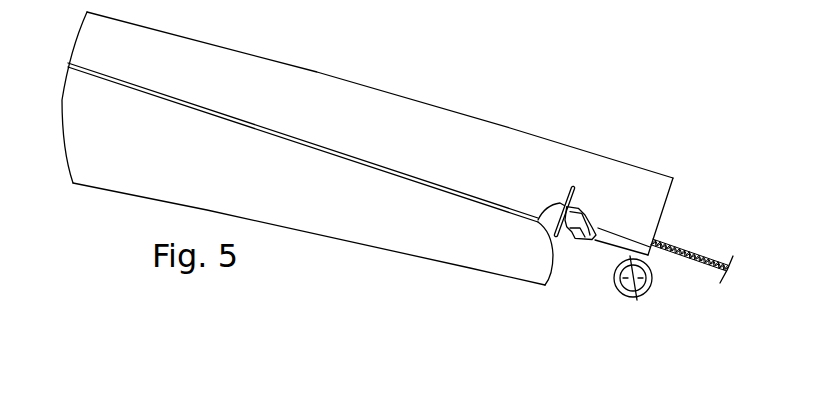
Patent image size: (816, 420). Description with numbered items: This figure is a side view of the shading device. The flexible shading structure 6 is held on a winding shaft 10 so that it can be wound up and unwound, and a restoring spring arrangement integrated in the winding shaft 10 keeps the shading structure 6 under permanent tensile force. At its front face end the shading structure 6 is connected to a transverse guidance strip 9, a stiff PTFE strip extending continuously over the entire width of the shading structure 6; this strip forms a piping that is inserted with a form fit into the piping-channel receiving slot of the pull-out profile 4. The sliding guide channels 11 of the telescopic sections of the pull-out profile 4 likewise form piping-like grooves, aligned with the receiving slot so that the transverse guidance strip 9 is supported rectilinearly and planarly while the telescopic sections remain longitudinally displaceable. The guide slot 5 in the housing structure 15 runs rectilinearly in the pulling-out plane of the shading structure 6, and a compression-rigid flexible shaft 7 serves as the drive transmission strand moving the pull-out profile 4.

The pull-out profile 4 is at (586, 209).
The guide slot 5 is at (317, 145).
The shading structure 6 is at (601, 250).
The flexible shaft 7 is at (685, 248).
The transverse guidance strip 9 is at (575, 239).
The winding shaft 10 is at (619, 280).
The sliding guide channel 11 is at (560, 246).
The housing structure 15 is at (238, 160).